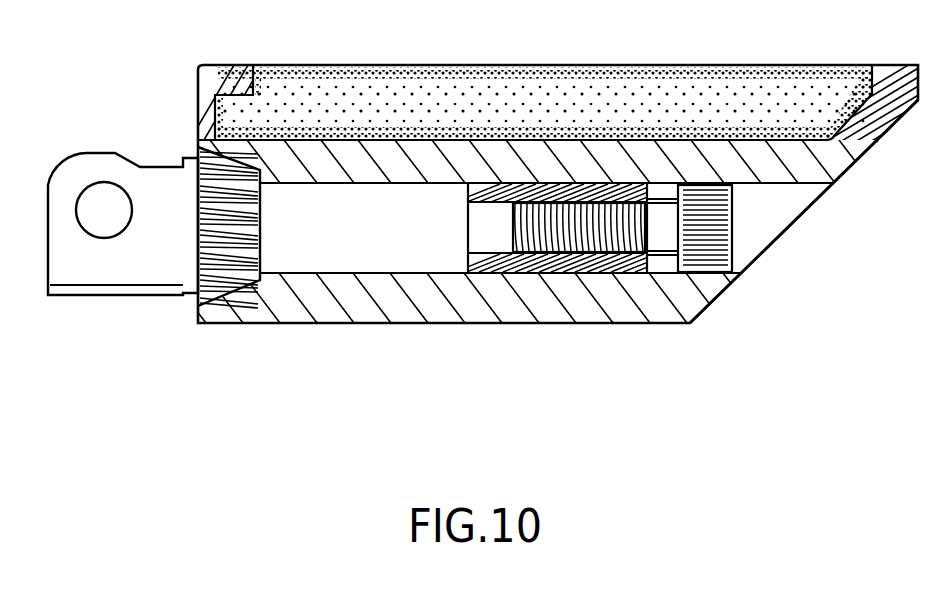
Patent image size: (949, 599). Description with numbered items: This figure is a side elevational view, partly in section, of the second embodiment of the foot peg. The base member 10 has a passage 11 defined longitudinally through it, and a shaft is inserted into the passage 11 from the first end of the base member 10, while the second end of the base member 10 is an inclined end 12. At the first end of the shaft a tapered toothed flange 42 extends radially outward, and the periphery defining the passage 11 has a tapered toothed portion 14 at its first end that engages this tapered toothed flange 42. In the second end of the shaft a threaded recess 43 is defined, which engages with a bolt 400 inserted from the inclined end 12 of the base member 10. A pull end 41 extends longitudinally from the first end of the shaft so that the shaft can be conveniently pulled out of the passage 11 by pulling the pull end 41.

The base member 10 is at (487, 342).
The passage 11 is at (407, 272).
The inclined end 12 is at (868, 152).
The tapered toothed portion 14 is at (233, 297).
The pull end 41 is at (122, 270).
The tapered toothed flange 42 is at (230, 275).
The threaded recess 43 is at (562, 253).
The bolt 400 is at (722, 228).